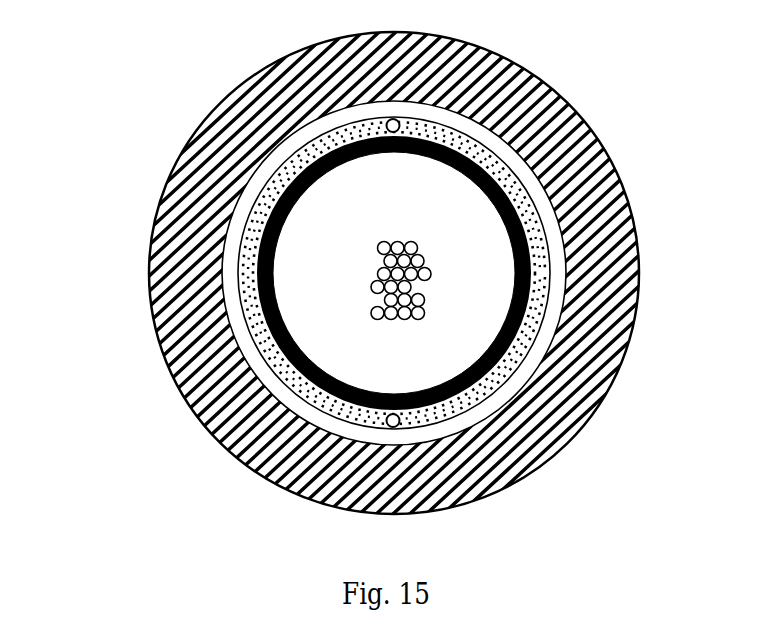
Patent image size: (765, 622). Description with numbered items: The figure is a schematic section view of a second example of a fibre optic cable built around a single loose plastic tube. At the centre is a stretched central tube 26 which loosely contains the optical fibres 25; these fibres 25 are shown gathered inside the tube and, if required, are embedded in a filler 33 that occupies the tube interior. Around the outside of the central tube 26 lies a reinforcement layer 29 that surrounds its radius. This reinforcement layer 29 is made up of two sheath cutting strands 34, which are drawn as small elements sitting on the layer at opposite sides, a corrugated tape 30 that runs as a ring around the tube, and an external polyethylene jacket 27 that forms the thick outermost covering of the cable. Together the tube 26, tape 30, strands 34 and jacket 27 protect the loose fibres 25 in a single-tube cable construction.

The optical fibres 25 is at (398, 295).
The central tube 26 is at (257, 287).
The external polyethylene jacket 27 is at (277, 107).
The reinforcement layer 29 is at (243, 440).
The corrugated tape 30 is at (253, 192).
The filler 33 is at (477, 208).
The sheath cutting strands 34 is at (432, 44).